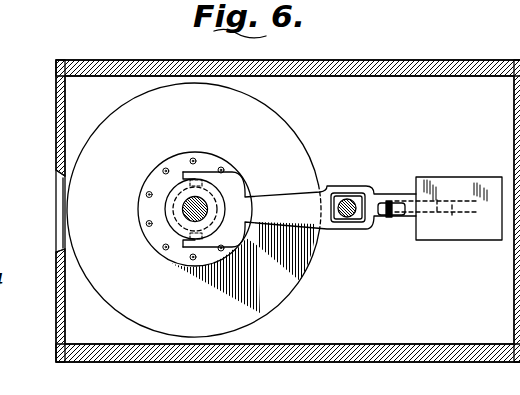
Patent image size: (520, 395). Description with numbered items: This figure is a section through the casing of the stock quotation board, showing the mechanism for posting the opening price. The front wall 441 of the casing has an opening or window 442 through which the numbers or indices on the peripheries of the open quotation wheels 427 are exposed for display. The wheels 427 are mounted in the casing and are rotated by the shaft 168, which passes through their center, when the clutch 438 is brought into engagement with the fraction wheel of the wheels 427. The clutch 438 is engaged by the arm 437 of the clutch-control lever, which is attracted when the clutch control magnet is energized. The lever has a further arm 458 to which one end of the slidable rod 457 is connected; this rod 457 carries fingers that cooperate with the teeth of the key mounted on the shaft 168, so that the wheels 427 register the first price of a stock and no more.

The front wall 441 is at (56, 99).
The window 442 is at (56, 173).
The open quotation wheels 427 is at (289, 124).
The clutch 438 is at (197, 152).
The shaft 168 is at (183, 209).
The arm 458 is at (305, 224).
The slidable rod 457 is at (386, 217).
The arm 437 is at (430, 177).